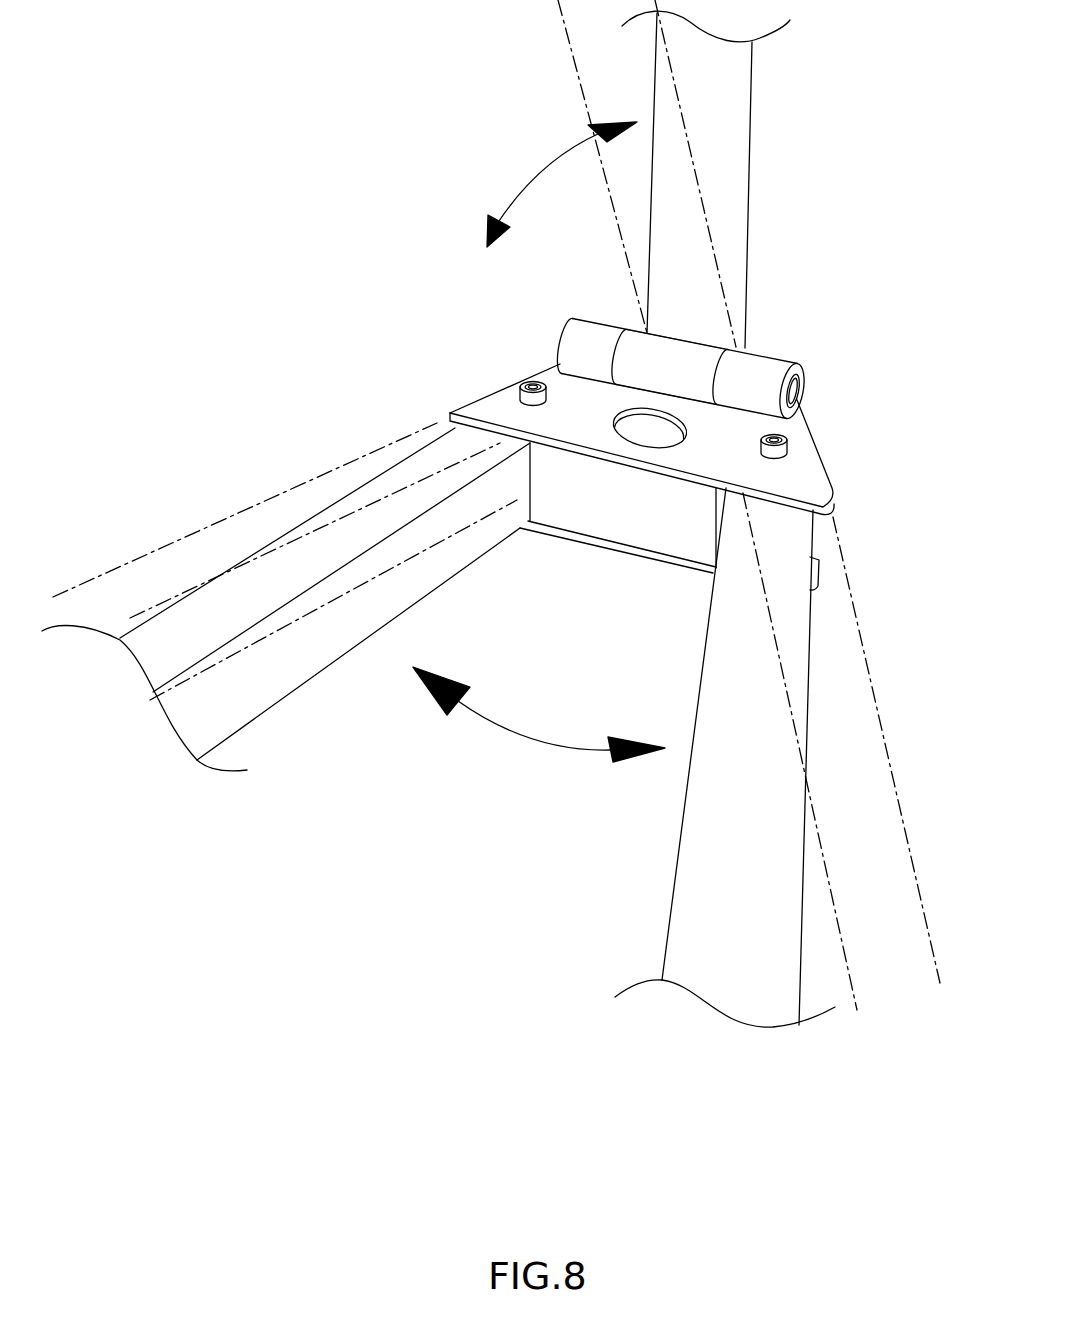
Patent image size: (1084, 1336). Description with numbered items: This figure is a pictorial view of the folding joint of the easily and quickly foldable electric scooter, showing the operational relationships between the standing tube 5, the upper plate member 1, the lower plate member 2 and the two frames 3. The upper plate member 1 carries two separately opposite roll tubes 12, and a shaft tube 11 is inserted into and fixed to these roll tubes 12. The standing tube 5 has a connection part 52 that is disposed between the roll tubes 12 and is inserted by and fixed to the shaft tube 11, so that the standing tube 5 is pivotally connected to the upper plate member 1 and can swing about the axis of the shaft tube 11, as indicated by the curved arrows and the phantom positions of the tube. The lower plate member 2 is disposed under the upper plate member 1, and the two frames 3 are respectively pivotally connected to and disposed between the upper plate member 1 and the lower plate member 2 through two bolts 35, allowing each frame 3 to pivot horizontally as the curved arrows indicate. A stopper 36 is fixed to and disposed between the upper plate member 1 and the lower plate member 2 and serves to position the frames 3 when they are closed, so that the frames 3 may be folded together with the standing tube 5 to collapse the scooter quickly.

The upper plate member 1 is at (820, 453).
The lower plate member 2 is at (820, 570).
The frame 3 is at (320, 690).
The standing tube 5 is at (753, 112).
The shaft tube 11 is at (803, 382).
The roll tube 12 is at (570, 340).
The bolt 35 is at (525, 383).
The stopper 36 is at (597, 508).
The connection part 52 is at (645, 348).